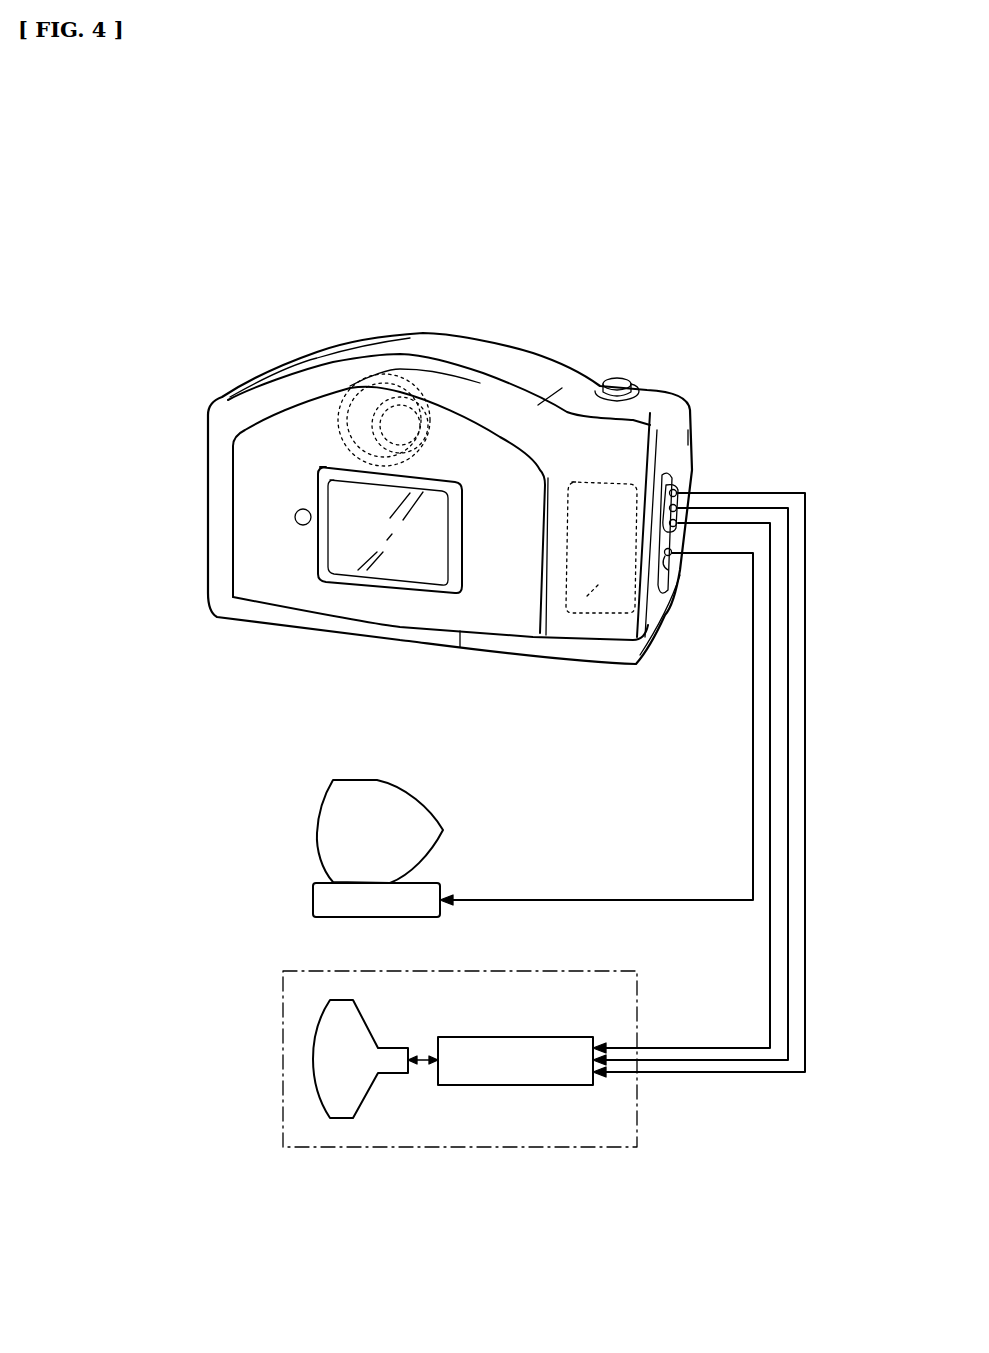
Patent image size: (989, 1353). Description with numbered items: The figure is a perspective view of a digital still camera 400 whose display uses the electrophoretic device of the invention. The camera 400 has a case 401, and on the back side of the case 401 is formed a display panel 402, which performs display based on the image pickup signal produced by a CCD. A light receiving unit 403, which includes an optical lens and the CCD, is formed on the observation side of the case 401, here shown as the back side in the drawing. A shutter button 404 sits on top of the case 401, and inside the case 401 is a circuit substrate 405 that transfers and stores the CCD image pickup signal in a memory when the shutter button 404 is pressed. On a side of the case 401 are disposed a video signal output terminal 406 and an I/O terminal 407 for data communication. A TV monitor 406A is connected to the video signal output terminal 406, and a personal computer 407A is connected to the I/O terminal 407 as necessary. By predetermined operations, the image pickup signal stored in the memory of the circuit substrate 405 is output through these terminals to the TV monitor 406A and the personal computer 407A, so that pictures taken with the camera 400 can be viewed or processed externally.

The digital still camera 400 is at (519, 309).
The case 401 is at (218, 461).
The display panel 402 is at (420, 557).
The light receiving unit 403 is at (422, 365).
The shutter button 404 is at (613, 378).
The circuit substrate 405 is at (580, 597).
The video signal output terminal 406 is at (692, 466).
The I/O terminal 407 is at (680, 577).
The personal computer 407A is at (320, 808).
The TV monitor 406A is at (282, 1012).